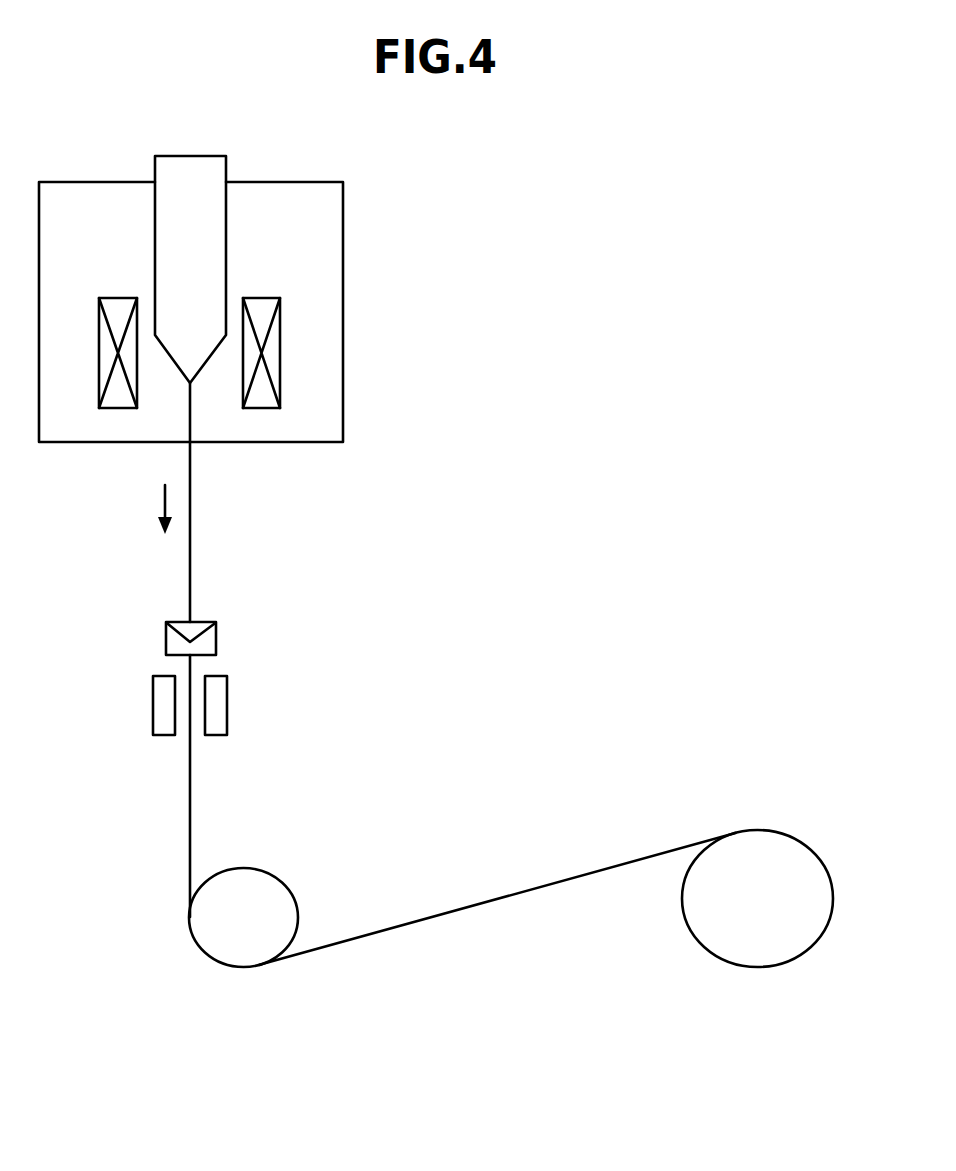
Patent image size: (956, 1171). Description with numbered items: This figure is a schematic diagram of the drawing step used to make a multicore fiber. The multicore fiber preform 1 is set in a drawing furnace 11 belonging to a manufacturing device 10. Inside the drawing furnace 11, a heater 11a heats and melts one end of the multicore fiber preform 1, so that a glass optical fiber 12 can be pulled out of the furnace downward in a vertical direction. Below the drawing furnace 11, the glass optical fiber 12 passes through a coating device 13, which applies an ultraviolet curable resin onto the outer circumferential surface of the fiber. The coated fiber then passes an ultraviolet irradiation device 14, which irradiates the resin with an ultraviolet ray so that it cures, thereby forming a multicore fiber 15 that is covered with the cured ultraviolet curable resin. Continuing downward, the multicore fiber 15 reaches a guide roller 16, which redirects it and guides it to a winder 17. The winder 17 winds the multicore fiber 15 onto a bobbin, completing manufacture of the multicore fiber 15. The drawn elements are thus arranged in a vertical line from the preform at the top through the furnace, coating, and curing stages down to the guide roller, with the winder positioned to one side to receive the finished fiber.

The multicore fiber preform 1 is at (190, 154).
The manufacturing device 10 is at (590, 233).
The drawing furnace 11 is at (364, 260).
The heater 11a is at (280, 353).
The glass optical fiber 12 is at (192, 530).
The coating device 13 is at (217, 635).
The ultraviolet irradiation device 14 is at (227, 705).
The multicore fiber 15 is at (188, 803).
The guide roller 16 is at (243, 868).
The winder 17 is at (763, 830).